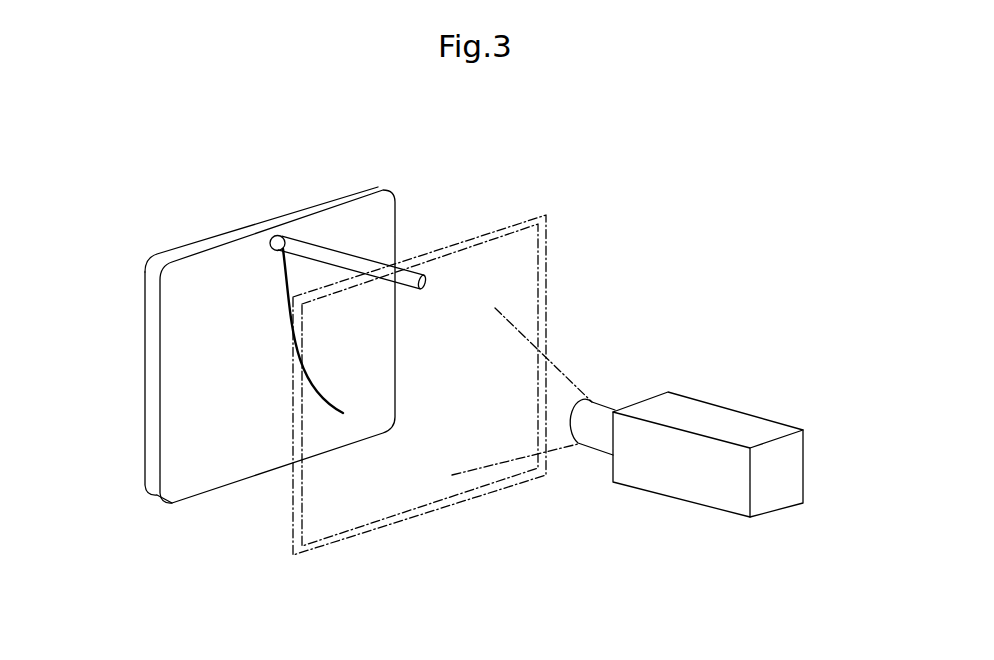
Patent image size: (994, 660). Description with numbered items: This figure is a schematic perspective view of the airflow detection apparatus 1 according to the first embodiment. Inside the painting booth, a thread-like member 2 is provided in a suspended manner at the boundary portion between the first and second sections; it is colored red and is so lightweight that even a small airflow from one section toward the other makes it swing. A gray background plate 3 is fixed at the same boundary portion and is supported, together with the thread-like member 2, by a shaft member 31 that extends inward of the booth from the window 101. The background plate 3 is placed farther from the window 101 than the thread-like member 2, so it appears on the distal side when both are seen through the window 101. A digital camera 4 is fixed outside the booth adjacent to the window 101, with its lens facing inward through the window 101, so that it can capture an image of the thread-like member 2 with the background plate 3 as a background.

The airflow detection apparatus 1 is at (615, 170).
The thread-like member 2 is at (317, 386).
The background plate 3 is at (187, 252).
The shaft member 31 is at (325, 255).
The digital camera 4 is at (705, 415).
The window 101 is at (547, 262).